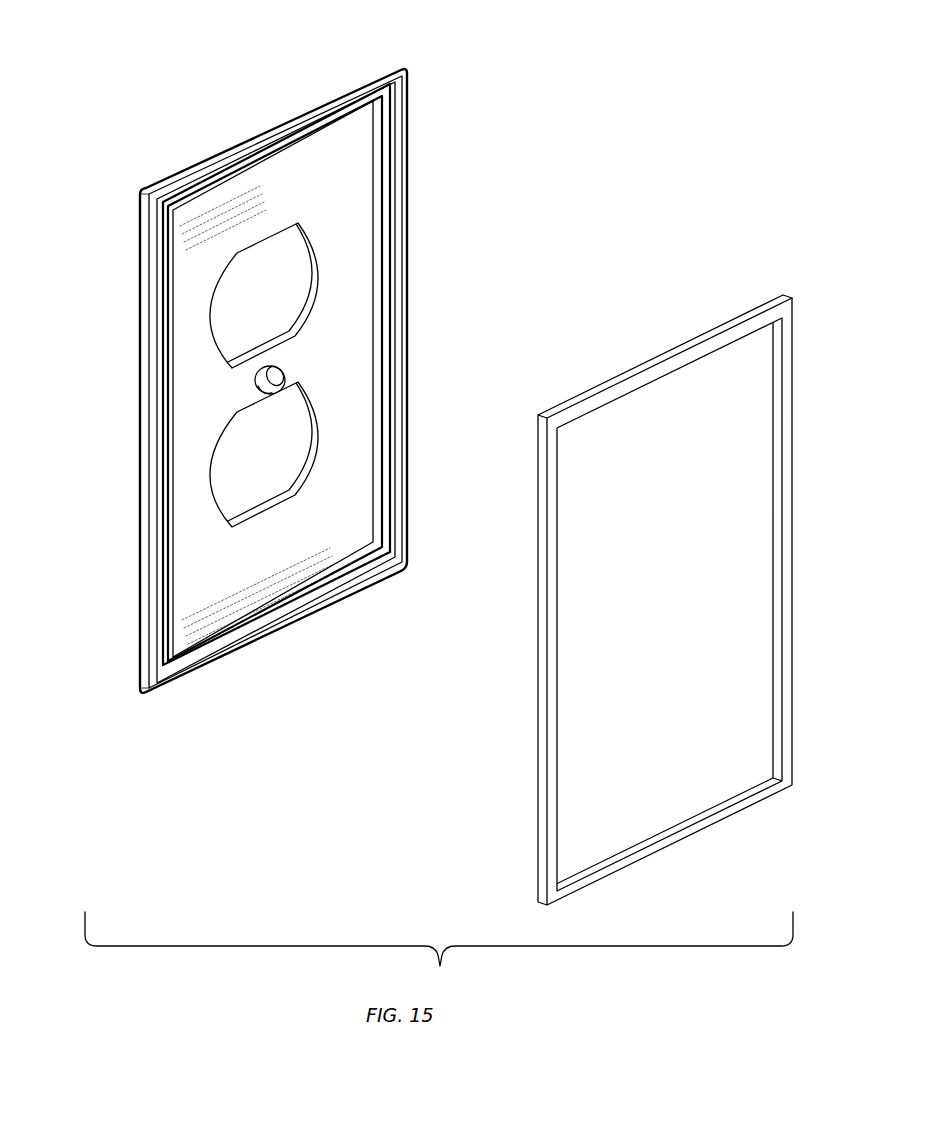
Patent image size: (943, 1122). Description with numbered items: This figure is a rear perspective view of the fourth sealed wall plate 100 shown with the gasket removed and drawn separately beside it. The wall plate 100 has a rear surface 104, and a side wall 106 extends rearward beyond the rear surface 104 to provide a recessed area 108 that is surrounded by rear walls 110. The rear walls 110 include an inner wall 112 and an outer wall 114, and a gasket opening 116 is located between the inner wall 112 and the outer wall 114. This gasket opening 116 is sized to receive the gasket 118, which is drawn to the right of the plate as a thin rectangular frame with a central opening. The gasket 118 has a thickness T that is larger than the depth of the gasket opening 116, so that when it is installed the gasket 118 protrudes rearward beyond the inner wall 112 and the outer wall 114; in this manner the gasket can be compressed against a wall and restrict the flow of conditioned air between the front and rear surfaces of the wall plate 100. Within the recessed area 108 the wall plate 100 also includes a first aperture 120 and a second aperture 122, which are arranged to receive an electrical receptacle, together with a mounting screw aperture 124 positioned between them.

The fourth sealed wall plate 100 is at (580, 135).
The rear surface 104 is at (344, 262).
The side wall 106 is at (162, 186).
The recessed area 108 is at (197, 410).
The rear walls 110 is at (140, 204).
The inner wall 112 is at (385, 108).
The outer wall 114 is at (369, 90).
The gasket opening 116 is at (261, 156).
The gasket 118 is at (728, 320).
The first aperture 120 is at (296, 246).
The second aperture 122 is at (297, 451).
The mounting screw aperture 124 is at (292, 368).
The thickness T is at (546, 448).